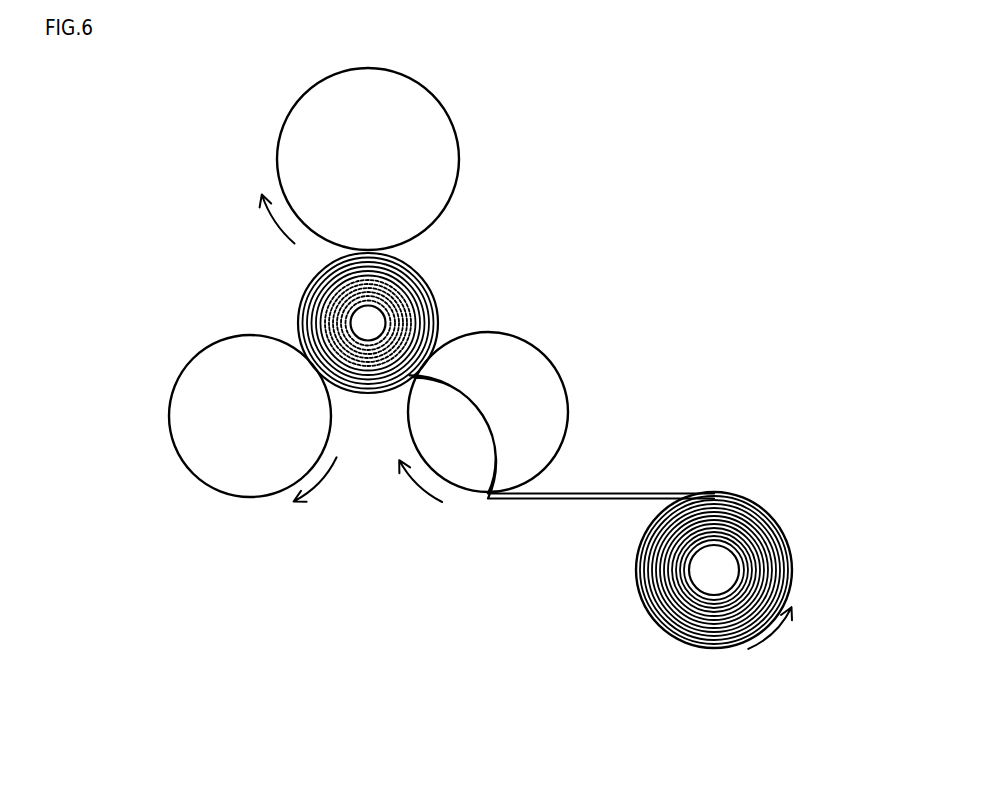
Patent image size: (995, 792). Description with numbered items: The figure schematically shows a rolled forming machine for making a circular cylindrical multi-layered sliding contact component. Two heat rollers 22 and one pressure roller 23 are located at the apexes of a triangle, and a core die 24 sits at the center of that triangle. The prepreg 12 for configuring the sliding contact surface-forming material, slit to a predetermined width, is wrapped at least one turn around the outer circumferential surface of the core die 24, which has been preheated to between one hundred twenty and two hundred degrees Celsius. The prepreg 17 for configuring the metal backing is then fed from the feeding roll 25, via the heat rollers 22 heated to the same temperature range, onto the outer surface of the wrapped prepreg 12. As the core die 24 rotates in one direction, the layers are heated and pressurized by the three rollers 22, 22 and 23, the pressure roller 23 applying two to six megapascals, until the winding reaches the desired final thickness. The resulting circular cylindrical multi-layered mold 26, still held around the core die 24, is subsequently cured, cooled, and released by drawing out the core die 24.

The prepreg for configuring the sliding contact surface-forming material 12 is at (380, 272).
The prepreg for configuring the metal backing 17 is at (417, 302).
The heat roller 22 is at (213, 373).
The pressure roller 23 is at (418, 132).
The core die 24 is at (358, 322).
The feeding roll 25 is at (725, 557).
The circular cylindrical multi-layered mold 26 is at (535, 197).